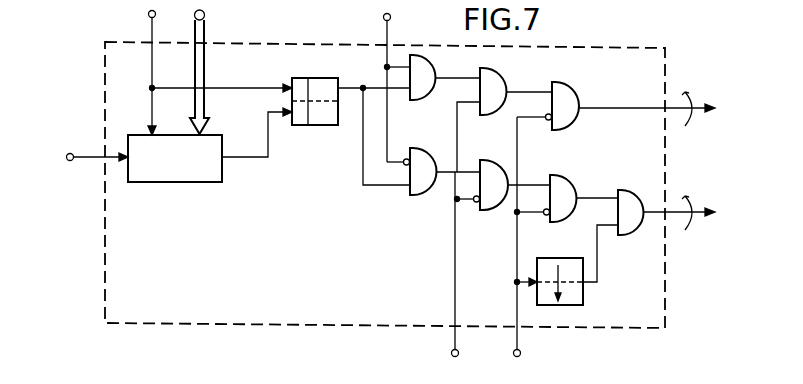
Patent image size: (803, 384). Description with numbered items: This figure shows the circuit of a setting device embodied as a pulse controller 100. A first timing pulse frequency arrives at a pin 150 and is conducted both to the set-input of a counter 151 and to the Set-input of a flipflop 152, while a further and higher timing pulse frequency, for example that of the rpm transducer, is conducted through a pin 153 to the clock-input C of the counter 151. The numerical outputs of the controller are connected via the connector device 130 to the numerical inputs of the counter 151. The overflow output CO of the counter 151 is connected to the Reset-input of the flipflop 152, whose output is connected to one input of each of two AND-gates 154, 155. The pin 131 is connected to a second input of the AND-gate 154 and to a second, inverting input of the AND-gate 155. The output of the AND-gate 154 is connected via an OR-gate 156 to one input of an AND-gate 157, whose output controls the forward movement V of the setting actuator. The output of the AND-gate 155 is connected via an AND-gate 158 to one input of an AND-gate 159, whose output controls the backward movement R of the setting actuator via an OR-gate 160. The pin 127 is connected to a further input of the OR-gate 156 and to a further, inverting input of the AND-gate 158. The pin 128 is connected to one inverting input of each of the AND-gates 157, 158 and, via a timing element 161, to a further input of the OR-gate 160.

The pulse controller 100 is at (203, 326).
The pin 127 is at (452, 354).
The pin 128 is at (520, 355).
The connector device 130 is at (205, 15).
The pin 131 is at (390, 18).
The pin 150 is at (148, 14).
The counter 151 is at (176, 170).
The flipflop 152 is at (320, 84).
The pin 153 is at (68, 160).
The AND-gate 154 is at (430, 75).
The AND-gate 155 is at (418, 160).
The OR-gate 156 is at (496, 89).
The AND-gate 157 is at (572, 100).
The AND-gate 158 is at (480, 170).
The AND-gate 159 is at (558, 186).
The OR-gate 160 is at (623, 196).
The timing element 161 is at (585, 292).